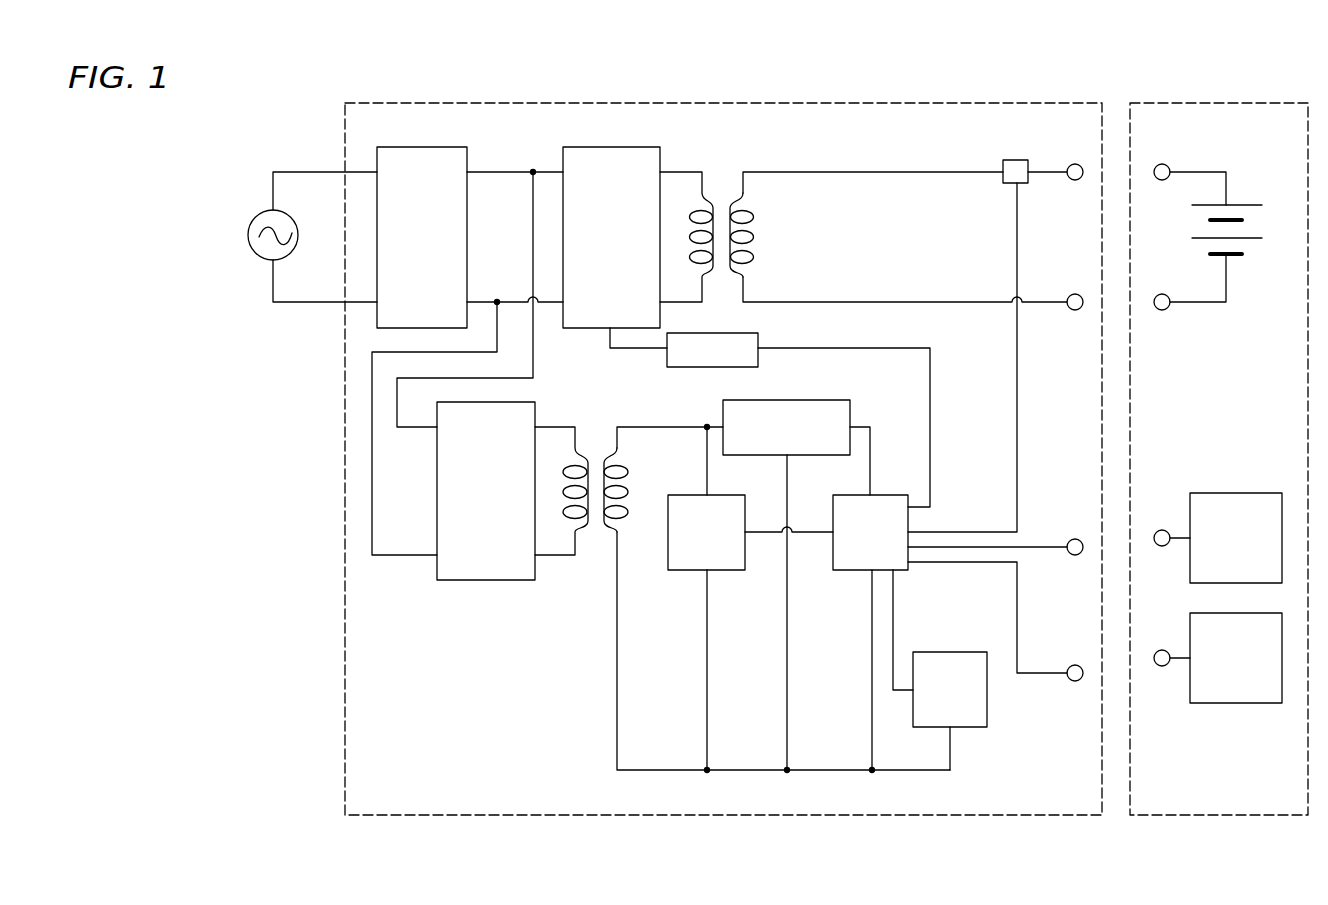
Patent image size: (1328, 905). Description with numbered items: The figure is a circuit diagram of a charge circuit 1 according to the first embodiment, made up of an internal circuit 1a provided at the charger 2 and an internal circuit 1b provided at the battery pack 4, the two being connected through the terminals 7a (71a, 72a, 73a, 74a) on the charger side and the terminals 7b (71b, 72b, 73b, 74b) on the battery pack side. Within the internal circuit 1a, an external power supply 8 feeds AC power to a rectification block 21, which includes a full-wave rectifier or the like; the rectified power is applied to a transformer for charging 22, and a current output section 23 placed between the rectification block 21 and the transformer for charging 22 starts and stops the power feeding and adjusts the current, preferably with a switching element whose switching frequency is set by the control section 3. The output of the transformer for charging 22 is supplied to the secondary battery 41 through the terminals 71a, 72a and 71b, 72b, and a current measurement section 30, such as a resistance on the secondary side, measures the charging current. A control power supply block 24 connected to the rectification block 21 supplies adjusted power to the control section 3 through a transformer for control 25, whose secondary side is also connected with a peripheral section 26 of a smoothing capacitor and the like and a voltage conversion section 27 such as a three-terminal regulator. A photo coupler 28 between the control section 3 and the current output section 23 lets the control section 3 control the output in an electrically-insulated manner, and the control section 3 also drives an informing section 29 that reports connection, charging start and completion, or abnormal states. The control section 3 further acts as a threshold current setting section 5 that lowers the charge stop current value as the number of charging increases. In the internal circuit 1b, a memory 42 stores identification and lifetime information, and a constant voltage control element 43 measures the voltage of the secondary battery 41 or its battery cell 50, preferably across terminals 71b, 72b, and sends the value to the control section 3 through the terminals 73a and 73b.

The charge circuit 1 is at (826, 477).
The internal circuit (first circuit) 1a is at (723, 461).
The internal circuit (second circuit) 1b is at (1199, 461).
The charger 2 is at (957, 103).
The control section 3 is at (937, 632).
The battery pack 4 is at (1213, 103).
The threshold current setting section 5 is at (857, 558).
The terminals 7a is at (1057, 464).
The terminals 7b is at (1202, 444).
The external power supply 8 is at (247, 236).
The rectification block 21 is at (453, 160).
The transformer for charging (first transformer) 22 is at (722, 181).
The current output section 23 is at (608, 165).
The control power supply block 24 is at (480, 568).
The transformer for control (second transformer) 25 is at (597, 440).
The peripheral section 26 is at (690, 573).
The voltage conversion section 27 is at (853, 411).
The photo coupler 28 is at (679, 360).
The informing section 29 is at (948, 662).
The current measurement section 30 is at (1002, 181).
The secondary battery 41 is at (1235, 258).
The memory 42 is at (1257, 704).
The constant voltage control element 43 is at (1257, 503).
The battery cell 50 is at (1253, 220).
The terminal 71a is at (1075, 180).
The terminal 72a is at (1075, 310).
The terminal 73a is at (1075, 539).
The terminal 74a is at (1072, 681).
The terminal 71b is at (1164, 164).
The terminal 72b is at (1163, 310).
The terminal 73b is at (1163, 530).
The terminal 74b is at (1163, 667).